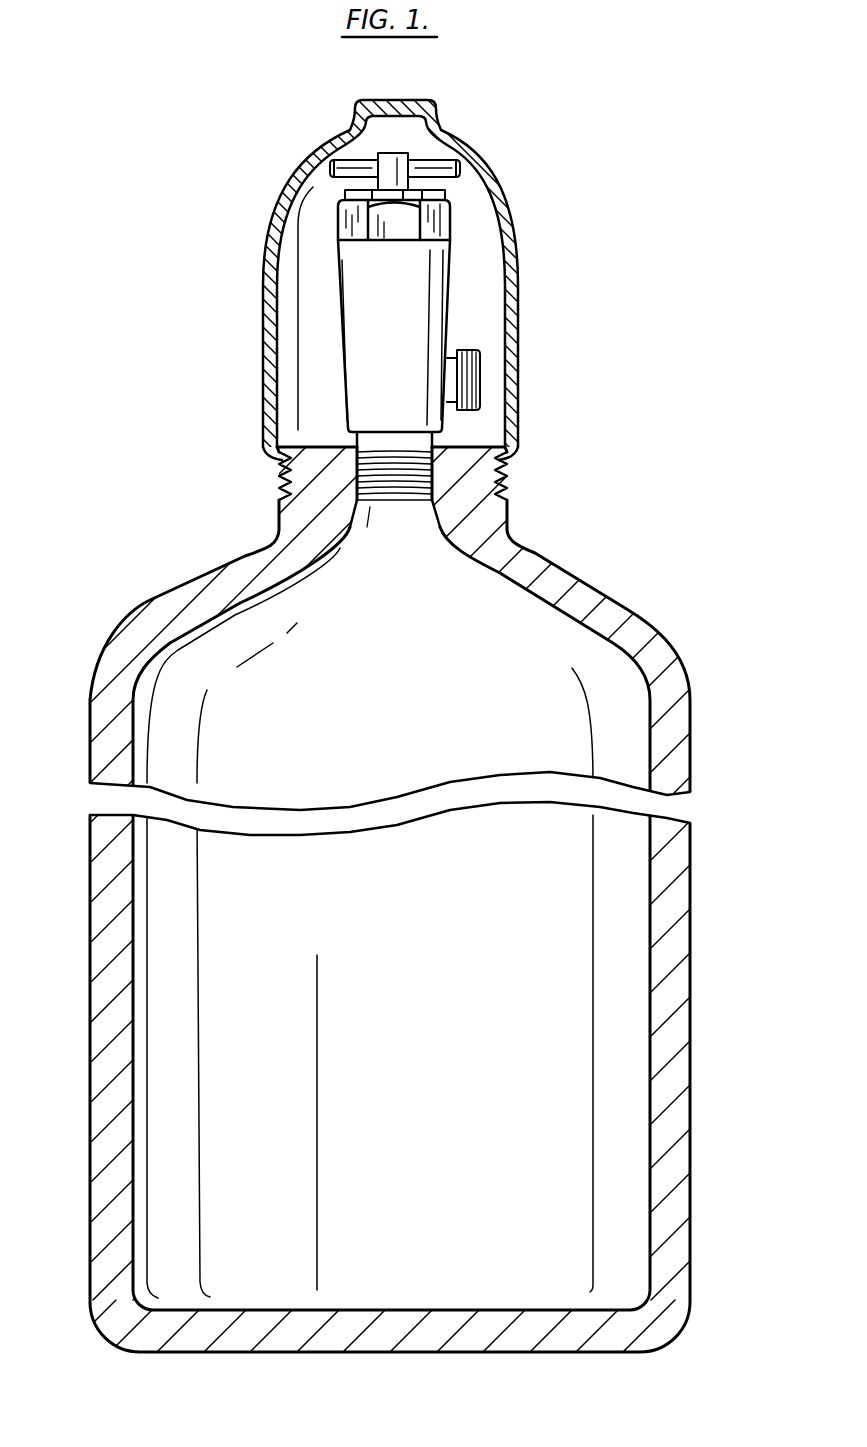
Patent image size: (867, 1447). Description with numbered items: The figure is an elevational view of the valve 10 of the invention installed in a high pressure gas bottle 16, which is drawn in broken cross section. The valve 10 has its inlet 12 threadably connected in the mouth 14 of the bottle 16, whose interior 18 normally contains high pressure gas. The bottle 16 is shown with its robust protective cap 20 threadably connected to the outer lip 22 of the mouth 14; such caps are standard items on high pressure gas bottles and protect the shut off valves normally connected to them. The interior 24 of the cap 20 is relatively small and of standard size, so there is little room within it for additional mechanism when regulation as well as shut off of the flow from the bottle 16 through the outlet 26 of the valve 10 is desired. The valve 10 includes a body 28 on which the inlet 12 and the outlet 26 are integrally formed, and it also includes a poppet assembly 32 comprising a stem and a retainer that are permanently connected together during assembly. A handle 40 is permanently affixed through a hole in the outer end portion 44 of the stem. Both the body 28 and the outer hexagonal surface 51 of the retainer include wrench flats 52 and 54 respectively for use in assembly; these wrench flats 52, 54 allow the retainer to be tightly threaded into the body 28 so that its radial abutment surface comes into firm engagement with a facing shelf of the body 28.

The valve 10 is at (341, 299).
The inlet 12 is at (400, 503).
The mouth 14 is at (360, 480).
The high pressure gas bottle 16 is at (90, 823).
The interior 18 is at (362, 921).
The robust protective cap 20 is at (520, 270).
The outer lip 22 is at (500, 488).
The interior of the cap 24 is at (317, 376).
The outlet 26 is at (482, 388).
The body 28 is at (423, 289).
The poppet assembly 32 is at (388, 191).
The handle 40 is at (443, 157).
The outer end portion 44 is at (390, 152).
The outer hexagonal surface 51 is at (343, 212).
The wrench flats 52 is at (413, 230).
The wrench flats 54 is at (373, 196).